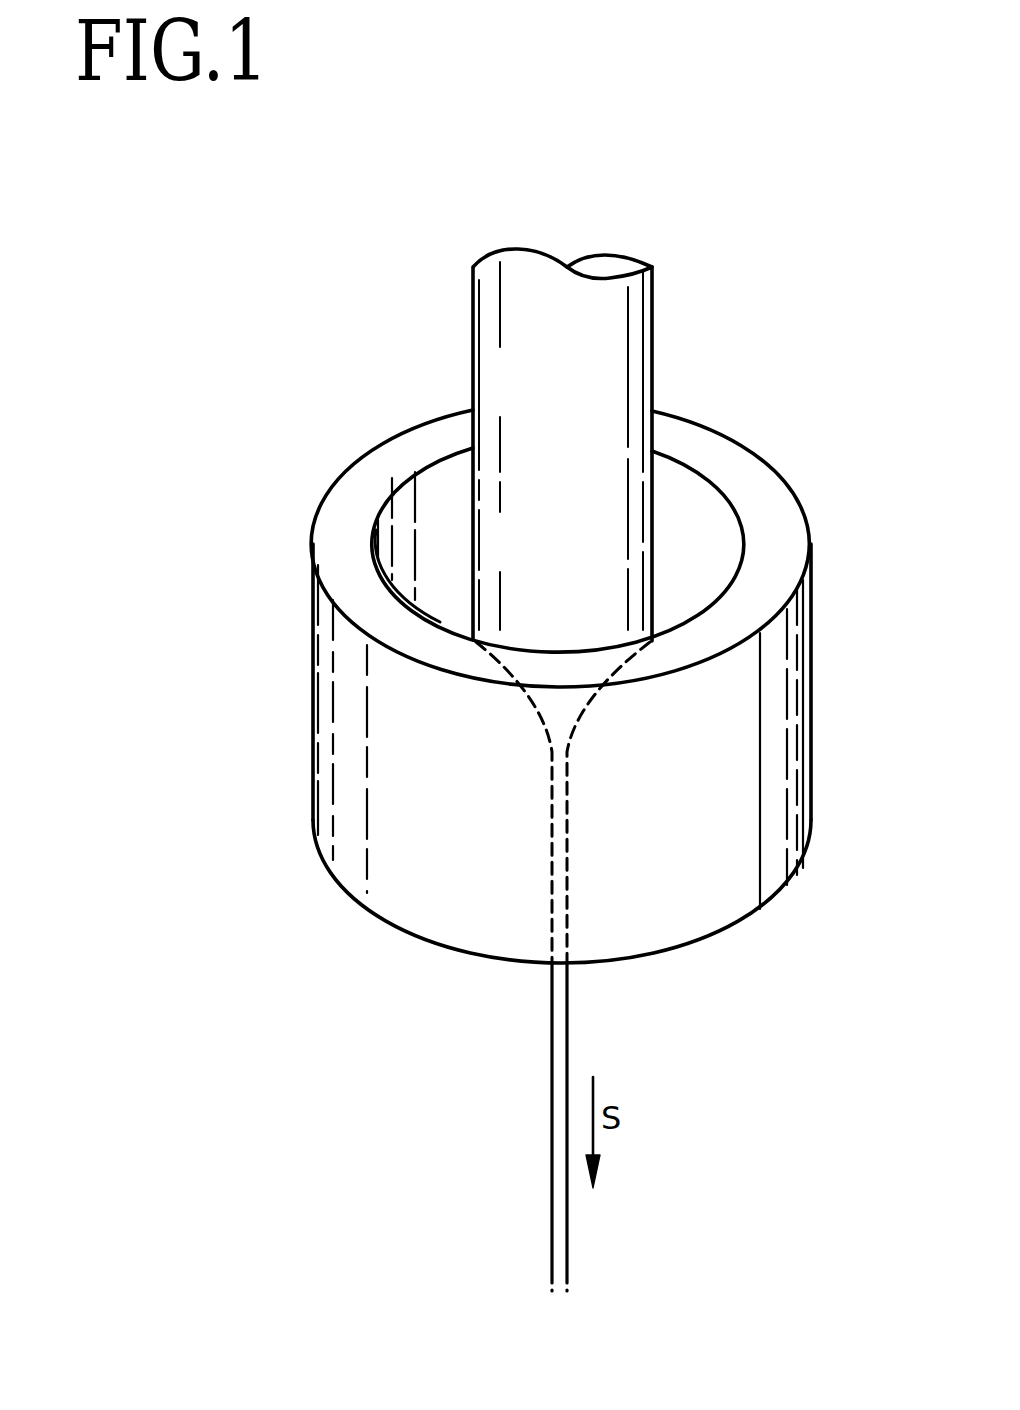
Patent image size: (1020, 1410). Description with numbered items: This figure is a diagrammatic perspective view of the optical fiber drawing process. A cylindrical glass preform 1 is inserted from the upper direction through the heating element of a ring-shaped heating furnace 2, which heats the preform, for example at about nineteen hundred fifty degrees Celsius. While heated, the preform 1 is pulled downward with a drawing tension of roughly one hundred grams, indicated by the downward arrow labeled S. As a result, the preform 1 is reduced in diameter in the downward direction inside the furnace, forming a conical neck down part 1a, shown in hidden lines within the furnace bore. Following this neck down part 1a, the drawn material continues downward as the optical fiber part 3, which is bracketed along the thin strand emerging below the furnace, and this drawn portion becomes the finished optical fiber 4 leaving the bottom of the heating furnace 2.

The preform 1 is at (640, 362).
The conical neck down part 1a is at (560, 723).
The heating furnace 2 is at (808, 625).
The optical fiber part 3 is at (632, 750).
The optical fiber 4 is at (551, 1160).